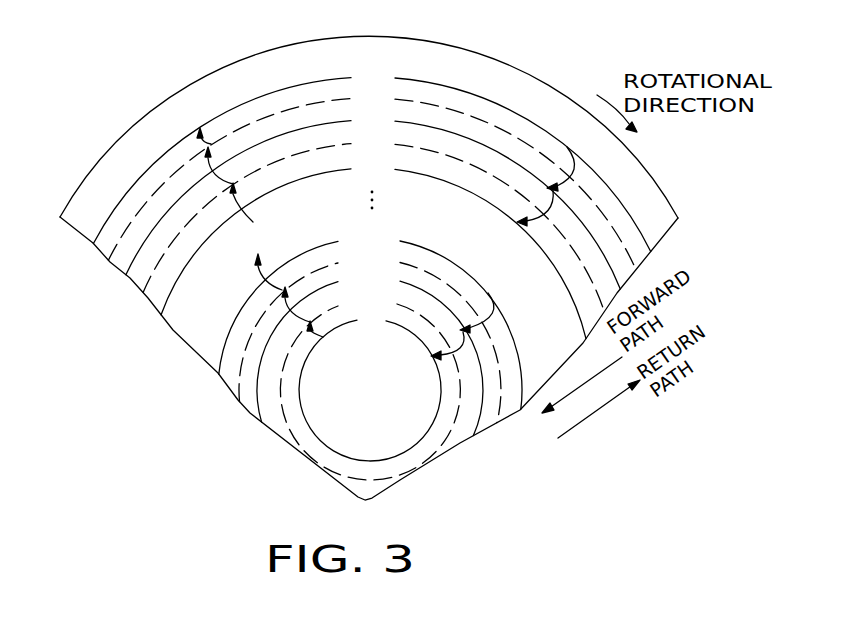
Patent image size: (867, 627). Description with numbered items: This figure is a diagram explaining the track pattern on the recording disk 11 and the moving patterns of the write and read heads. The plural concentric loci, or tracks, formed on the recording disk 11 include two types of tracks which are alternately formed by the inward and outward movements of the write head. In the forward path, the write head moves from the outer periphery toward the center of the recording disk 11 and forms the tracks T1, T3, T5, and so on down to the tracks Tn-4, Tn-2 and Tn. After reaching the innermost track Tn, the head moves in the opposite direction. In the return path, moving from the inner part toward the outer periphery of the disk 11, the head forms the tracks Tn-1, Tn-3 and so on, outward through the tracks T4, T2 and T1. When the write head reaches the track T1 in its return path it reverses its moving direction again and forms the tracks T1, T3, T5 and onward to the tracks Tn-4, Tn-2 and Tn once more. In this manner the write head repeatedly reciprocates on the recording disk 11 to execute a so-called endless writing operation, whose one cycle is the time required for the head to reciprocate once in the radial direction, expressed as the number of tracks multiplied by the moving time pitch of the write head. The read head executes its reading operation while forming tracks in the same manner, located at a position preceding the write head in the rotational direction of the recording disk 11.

The recording disk 11 is at (490, 51).
The track T1 is at (371, 158).
The track T2 is at (372, 178).
The track T3 is at (373, 199).
The track T4 is at (373, 222).
The track T5 is at (373, 248).
The track Tn-4 is at (370, 317).
The track Tn-3 is at (370, 335).
The track Tn-2 is at (370, 351).
The track Tn-1 is at (370, 385).
The track Tn is at (370, 384).